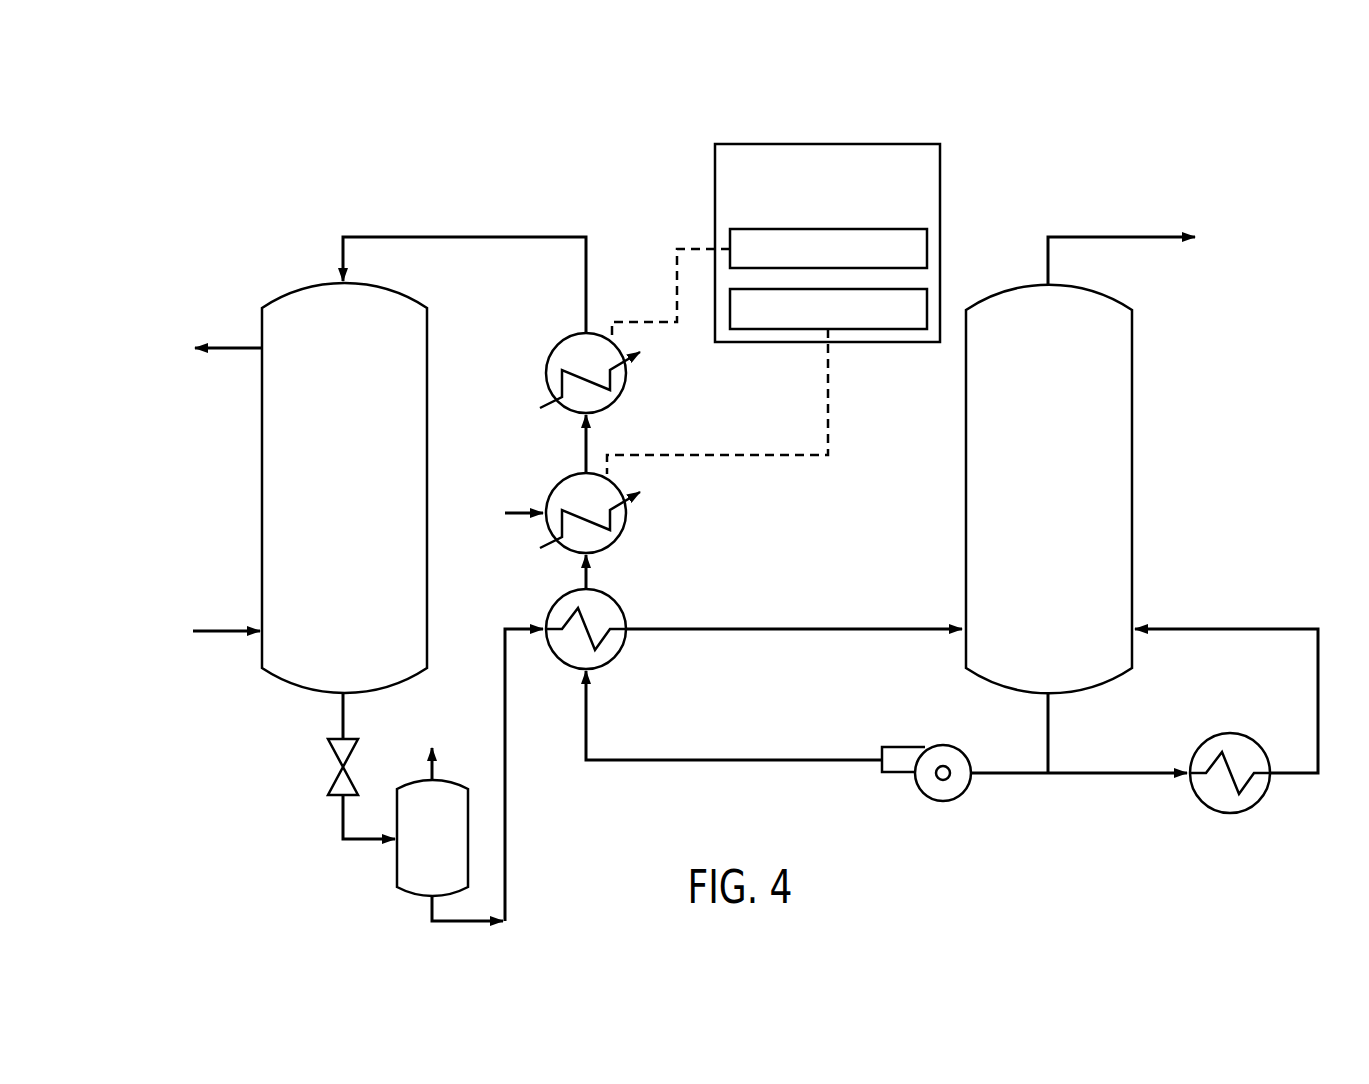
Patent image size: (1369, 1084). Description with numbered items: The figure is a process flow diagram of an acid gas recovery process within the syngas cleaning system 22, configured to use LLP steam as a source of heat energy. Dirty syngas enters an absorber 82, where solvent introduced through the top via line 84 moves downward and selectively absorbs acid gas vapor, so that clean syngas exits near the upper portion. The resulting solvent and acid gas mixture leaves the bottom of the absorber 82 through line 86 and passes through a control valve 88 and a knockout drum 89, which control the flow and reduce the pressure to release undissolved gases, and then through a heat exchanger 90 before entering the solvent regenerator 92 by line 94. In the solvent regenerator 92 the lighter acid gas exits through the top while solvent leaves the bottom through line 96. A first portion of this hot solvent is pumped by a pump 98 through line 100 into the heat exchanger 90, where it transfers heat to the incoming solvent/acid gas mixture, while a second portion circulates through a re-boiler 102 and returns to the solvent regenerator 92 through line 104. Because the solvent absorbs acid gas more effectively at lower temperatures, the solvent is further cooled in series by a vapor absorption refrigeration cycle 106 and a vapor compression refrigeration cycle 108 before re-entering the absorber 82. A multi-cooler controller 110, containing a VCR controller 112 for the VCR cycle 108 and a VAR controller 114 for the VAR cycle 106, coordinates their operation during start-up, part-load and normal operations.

The syngas cleaning system 22 is at (114, 212).
The absorber 82 is at (428, 418).
The line 84 is at (468, 237).
The line 86 is at (343, 708).
The control valve 88 is at (333, 755).
The knockout drum 89 is at (397, 868).
The heat exchanger 90 is at (622, 612).
The solvent regenerator 92 is at (1133, 418).
The line 94 is at (900, 628).
The line 96 is at (1048, 725).
The pump 98 is at (912, 747).
The line 100 is at (625, 760).
The re-boiler 102 is at (1200, 745).
The line 104 is at (1228, 629).
The vapor absorption refrigeration cycle 106 is at (560, 488).
The vapor compression refrigeration cycle 108 is at (560, 351).
The multi-cooler controller 110 is at (816, 309).
The VCR controller 112 is at (927, 249).
The VAR controller 114 is at (927, 309).